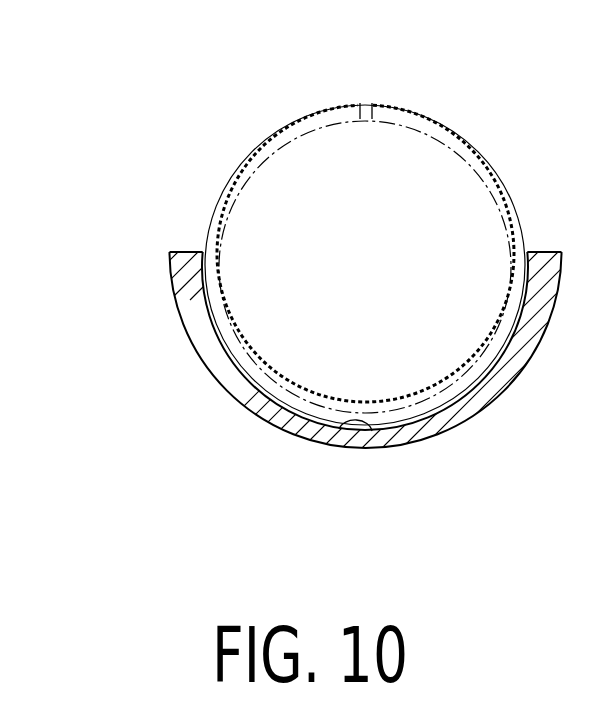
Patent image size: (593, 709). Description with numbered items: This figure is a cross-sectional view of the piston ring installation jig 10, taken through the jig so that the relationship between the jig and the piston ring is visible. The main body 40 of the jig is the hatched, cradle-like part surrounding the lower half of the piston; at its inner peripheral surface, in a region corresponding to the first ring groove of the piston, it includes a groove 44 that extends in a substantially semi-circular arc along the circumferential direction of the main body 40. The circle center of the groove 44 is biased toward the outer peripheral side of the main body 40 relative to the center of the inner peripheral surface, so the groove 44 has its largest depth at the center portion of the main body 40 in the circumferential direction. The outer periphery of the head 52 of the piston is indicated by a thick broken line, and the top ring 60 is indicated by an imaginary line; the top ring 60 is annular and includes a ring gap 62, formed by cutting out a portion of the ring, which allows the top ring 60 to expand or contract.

The piston ring installation jig 10 is at (150, 160).
The main body 40 is at (216, 383).
The groove 44 is at (372, 432).
The head 52 is at (253, 153).
The top ring 60 is at (442, 395).
The ring gap 62 is at (363, 112).